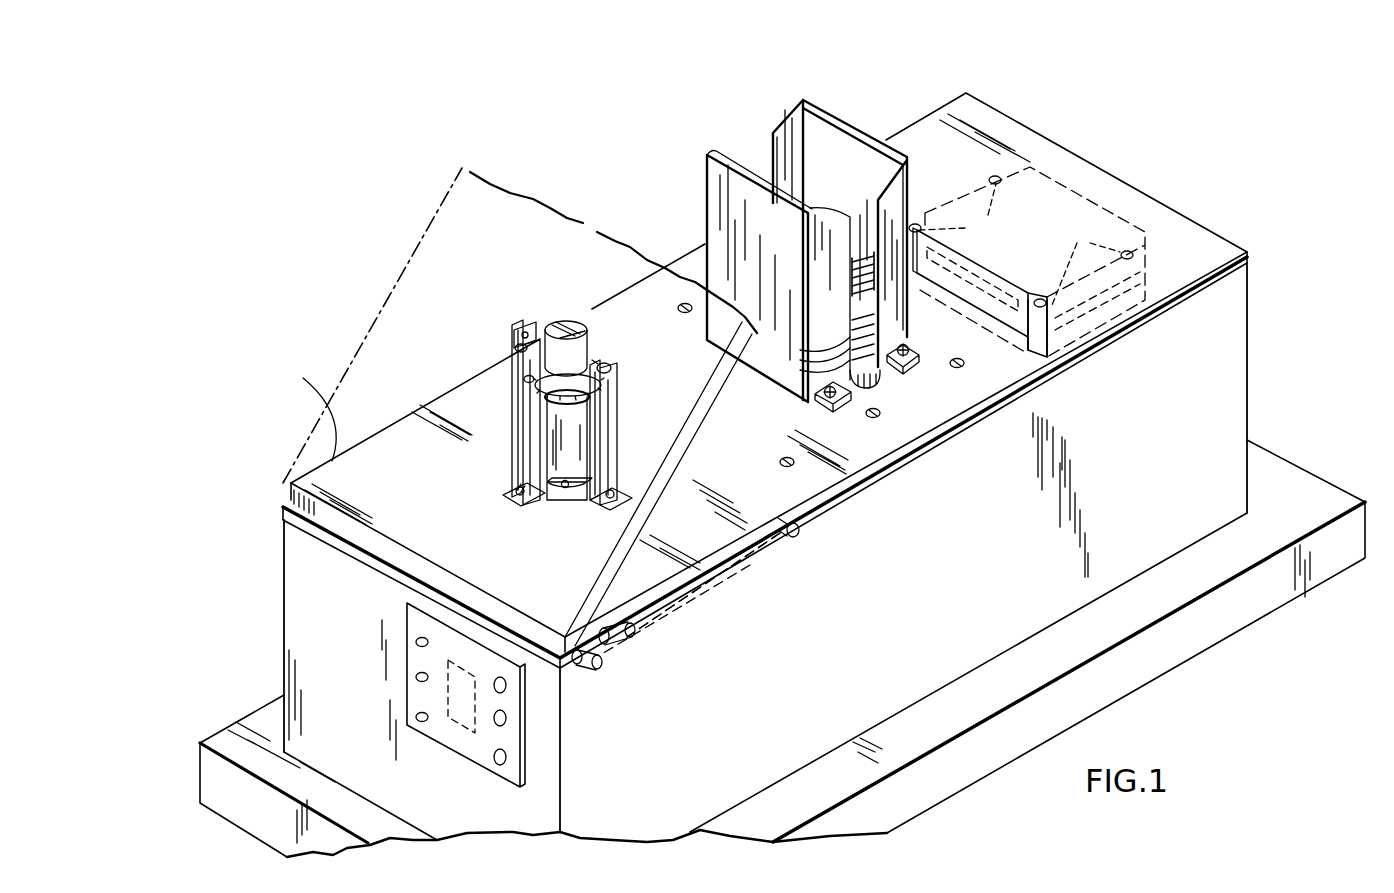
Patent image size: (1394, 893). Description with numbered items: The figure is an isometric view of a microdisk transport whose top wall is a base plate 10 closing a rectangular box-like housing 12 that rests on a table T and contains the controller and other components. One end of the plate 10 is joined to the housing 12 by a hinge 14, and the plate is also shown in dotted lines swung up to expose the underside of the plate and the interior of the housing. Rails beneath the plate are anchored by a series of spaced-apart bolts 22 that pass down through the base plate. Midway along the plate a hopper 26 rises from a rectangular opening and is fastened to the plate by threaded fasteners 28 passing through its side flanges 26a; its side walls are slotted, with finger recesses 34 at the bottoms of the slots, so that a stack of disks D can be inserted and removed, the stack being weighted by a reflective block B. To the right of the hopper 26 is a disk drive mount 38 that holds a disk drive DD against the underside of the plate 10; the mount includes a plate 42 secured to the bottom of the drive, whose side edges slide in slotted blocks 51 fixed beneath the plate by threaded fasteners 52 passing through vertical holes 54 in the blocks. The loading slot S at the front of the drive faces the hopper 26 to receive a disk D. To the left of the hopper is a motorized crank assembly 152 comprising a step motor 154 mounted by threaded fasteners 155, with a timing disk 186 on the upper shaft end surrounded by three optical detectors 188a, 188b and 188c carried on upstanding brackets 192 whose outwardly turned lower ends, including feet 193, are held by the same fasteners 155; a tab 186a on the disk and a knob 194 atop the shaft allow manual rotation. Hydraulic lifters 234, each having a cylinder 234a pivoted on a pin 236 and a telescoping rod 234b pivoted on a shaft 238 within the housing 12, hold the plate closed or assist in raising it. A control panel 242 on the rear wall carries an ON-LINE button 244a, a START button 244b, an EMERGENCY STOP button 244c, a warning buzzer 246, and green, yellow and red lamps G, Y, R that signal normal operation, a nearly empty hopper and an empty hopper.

The plate 10 is at (333, 387).
The housing 12 is at (296, 596).
The hinge 14 is at (288, 490).
The table T is at (218, 748).
The bolts 22 is at (678, 306).
The hopper 26 is at (708, 186).
The hopper side flanges 26a is at (840, 406).
The threaded fasteners 28 is at (820, 400).
The finger recesses 34 is at (884, 378).
The disk drive mount 38 is at (972, 163).
The plate 42 is at (1025, 347).
The slotted blocks 51 is at (947, 205).
The threaded fasteners 52 is at (1000, 184).
The vertical holes 54 is at (1020, 244).
The loading slot S is at (985, 277).
The disk drive DD is at (1122, 222).
The block B is at (858, 310).
The disk D is at (806, 362).
The motorized crank assembly 152 is at (486, 462).
The step motor 154 is at (578, 428).
The threaded fasteners 155 is at (566, 500).
The timing disk 186 is at (600, 392).
The gear ring tab 186a is at (524, 379).
The optical detector 188a is at (516, 348).
The optical detector 188b is at (611, 371).
The optical detector 188c is at (514, 333).
The brackets 192 is at (512, 412).
The post feet 193 is at (512, 490).
The knob 194 is at (566, 320).
The lifters 234 is at (703, 600).
The cylinder 234a is at (752, 572).
The telescoping rod 234b is at (630, 652).
The pin 236 is at (785, 523).
The shaft 238 is at (532, 616).
The control panel 242 is at (407, 607).
The ON-LINE button 244a is at (506, 688).
The START button 244b is at (506, 722).
The EMERGENCY STOP button 244c is at (502, 764).
The warning buzzer 246 is at (467, 727).
The red lamp R is at (416, 641).
The yellow lamp Y is at (416, 676).
The green lamp G is at (416, 716).